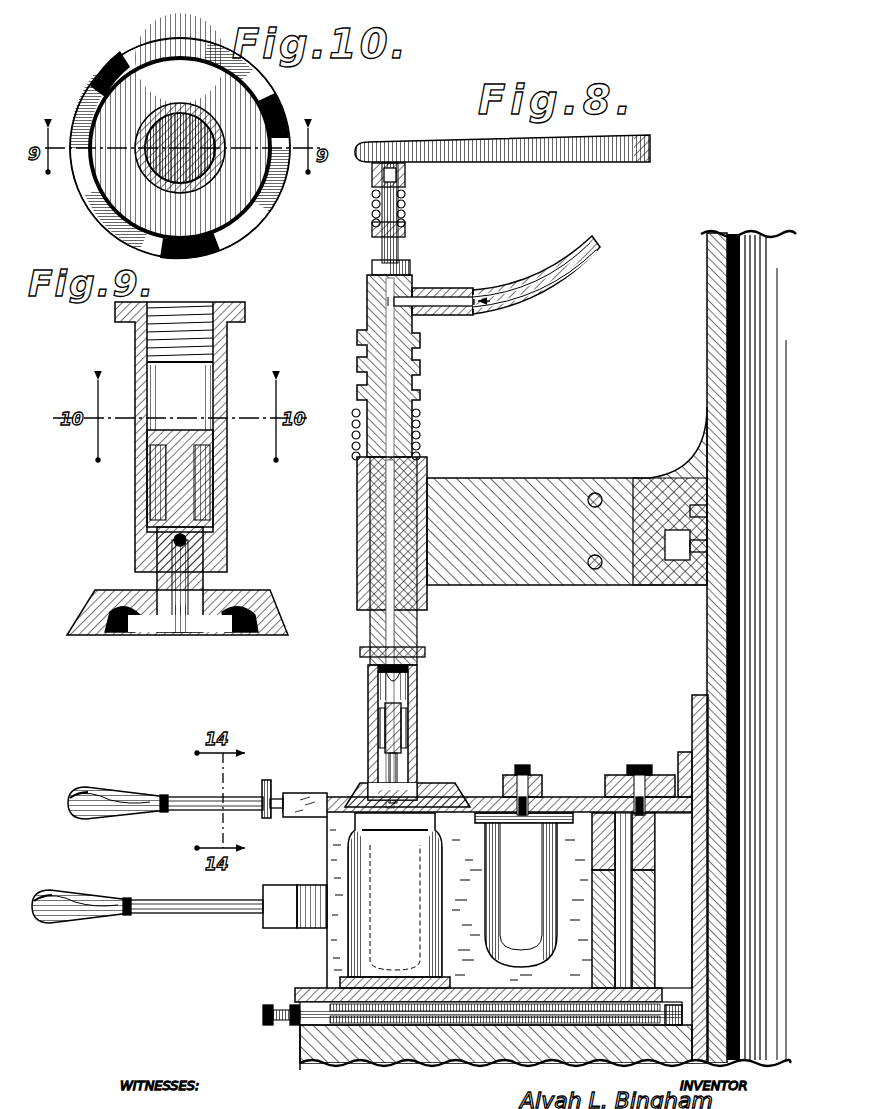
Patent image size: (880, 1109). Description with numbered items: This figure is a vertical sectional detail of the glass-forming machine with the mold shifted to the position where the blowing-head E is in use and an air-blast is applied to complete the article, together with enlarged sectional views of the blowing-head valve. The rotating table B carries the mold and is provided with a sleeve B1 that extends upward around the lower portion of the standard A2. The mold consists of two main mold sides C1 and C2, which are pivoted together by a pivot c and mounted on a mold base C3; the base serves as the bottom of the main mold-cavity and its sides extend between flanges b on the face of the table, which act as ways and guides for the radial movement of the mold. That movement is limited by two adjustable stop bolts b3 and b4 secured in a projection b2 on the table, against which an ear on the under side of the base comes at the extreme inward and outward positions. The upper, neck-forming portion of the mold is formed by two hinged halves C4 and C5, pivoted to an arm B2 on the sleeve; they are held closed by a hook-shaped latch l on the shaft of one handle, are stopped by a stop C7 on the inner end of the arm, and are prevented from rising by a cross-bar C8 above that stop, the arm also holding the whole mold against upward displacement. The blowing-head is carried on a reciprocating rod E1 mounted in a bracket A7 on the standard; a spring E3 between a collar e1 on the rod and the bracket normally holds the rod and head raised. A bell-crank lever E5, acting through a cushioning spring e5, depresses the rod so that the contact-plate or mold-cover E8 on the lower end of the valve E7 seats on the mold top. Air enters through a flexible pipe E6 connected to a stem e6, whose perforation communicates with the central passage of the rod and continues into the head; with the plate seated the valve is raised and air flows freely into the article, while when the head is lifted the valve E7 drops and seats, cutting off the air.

In FIG. 10, the blowing-head E is at (148, 146).
In FIG. 9, the blowing-head E is at (228, 367).
In FIG. 8, the blowing-head E is at (410, 730).
In FIG. 8, the reciprocating or piston rod E1 is at (418, 632).
In FIG. 8, the spring E3 is at (421, 420).
In FIG. 8, the bell-crank lever E5 is at (533, 160).
In FIG. 8, the flexible pipe E6 is at (542, 295).
In FIG. 10, the valve E7 is at (212, 172).
In FIG. 9, the valve E7 is at (182, 490).
In FIG. 8, the valve E7 is at (385, 722).
In FIG. 10, the contact-plate or mold-cover E8 is at (102, 86).
In FIG. 9, the contact-plate or mold-cover E8 is at (248, 600).
In FIG. 8, the contact-plate or mold-cover E8 is at (428, 792).
In FIG. 8, the flange or collar e1 is at (418, 398).
In FIG. 8, the spring e5 is at (405, 207).
In FIG. 8, the stem e6 is at (430, 298).
In FIG. 8, the standard A2 is at (715, 353).
In FIG. 8, the arm or bracket A7 is at (535, 490).
In FIG. 8, the rotating table B is at (545, 1047).
In FIG. 8, the sleeve B1 is at (700, 710).
In FIG. 8, the arm B2 is at (668, 815).
In FIG. 8, the main mold side C1 is at (346, 856).
In FIG. 8, the main mold side C2 is at (648, 864).
In FIG. 8, the mold base C3 is at (308, 986).
In FIG. 8, the upper mold half C4 is at (120, 795).
In FIG. 8, the upper mold half C5 is at (610, 780).
In FIG. 8, the stop C7 is at (90, 886).
In FIG. 8, the cross-bar C8 is at (509, 775).
In FIG. 8, the pivot c is at (625, 900).
In FIG. 8, the flange b is at (673, 1003).
In FIG. 8, the projection / pivot-bolt b2 is at (632, 775).
In FIG. 8, the stop bolt b3 is at (383, 1028).
In FIG. 8, the stop bolt b4 is at (262, 1014).
In FIG. 8, the hook-shaped latch l is at (266, 780).